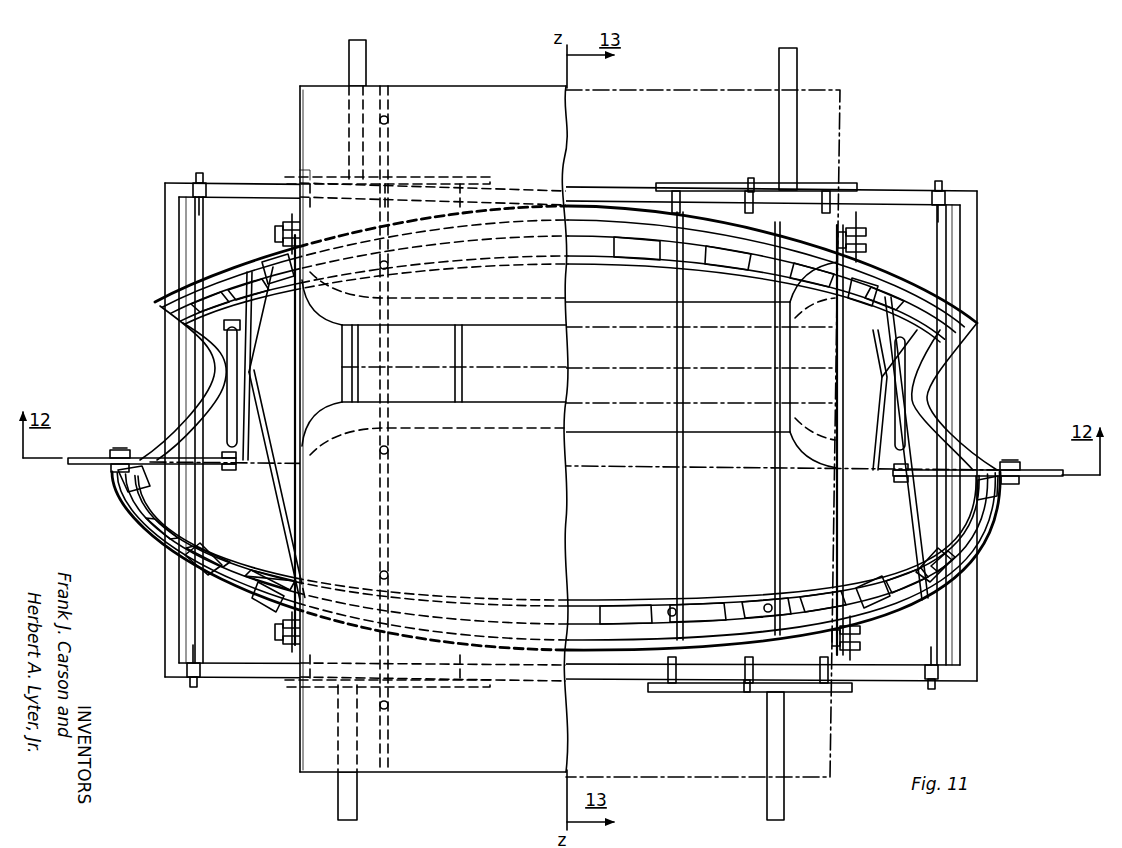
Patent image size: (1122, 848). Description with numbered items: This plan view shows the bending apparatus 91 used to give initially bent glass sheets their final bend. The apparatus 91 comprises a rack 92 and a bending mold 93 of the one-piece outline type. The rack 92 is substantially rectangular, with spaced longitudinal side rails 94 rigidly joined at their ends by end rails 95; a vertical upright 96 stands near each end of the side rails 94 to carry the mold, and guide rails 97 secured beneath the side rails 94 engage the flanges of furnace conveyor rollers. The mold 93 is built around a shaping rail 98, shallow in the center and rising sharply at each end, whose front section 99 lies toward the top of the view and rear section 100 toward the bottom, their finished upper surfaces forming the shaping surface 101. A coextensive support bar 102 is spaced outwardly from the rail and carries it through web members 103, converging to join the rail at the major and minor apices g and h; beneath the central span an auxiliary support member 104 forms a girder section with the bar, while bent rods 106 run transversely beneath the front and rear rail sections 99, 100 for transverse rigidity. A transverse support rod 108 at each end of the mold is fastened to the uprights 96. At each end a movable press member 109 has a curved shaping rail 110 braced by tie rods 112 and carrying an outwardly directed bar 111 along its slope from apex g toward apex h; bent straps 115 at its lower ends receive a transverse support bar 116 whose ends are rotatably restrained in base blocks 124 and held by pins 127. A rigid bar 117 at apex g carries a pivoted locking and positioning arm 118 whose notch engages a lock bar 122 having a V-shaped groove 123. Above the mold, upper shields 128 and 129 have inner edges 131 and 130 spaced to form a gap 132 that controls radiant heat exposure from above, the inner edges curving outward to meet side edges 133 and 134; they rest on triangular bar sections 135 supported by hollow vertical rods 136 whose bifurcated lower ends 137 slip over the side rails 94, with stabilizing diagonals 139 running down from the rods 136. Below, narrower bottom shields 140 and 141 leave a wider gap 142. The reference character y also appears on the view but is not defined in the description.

The bending apparatus 91 is at (242, 128).
The rack 92 is at (170, 178).
The bending mold 93 is at (170, 284).
The side rails 94 is at (884, 200).
The end rails 95 is at (177, 222).
The vertical upright 96 is at (204, 183).
The guide rails 97 is at (349, 66).
The shaping rail 98 is at (630, 598).
The front section 99 is at (737, 266).
The rear section 100 is at (714, 600).
The shaping surface 101 is at (584, 598).
The support bar 102 is at (168, 566).
The web members 103 is at (170, 528).
The auxiliary support member 104 is at (604, 208).
The bent rods 106 is at (680, 508).
The transverse support rod 108 is at (195, 630).
The press member 109 is at (226, 360).
The shaping rail of press member 110 is at (196, 582).
The outwardly directed bar 111 is at (206, 402).
The tie rods 112 is at (276, 491).
The bent strap 115 is at (858, 292).
The transverse support bar 116 is at (840, 392).
The rigid bar 117 is at (250, 458).
The locking and positioning arm 118 is at (86, 468).
The lock bar 122 is at (122, 450).
The V-shaped groove 123 is at (112, 452).
The base block 124 is at (283, 240).
The pin 127 is at (278, 224).
The upper shield 128 is at (325, 120).
The upper shield 129 is at (326, 726).
The inner longitudinal edge 130 is at (540, 404).
The inner edge 131 is at (540, 328).
The gap 132 is at (478, 378).
The side edge 133 is at (302, 522).
The side edge 134 is at (300, 174).
The triangular bar sections 135 is at (386, 356).
The vertical rods 136 is at (750, 180).
The bifurcated lower ends 137 is at (748, 204).
The stabilizing diagonals 139 is at (440, 182).
The bottom shield 140 is at (642, 306).
The bottom shield 141 is at (589, 456).
The gap 142 is at (637, 380).
The minor apex h is at (160, 318).
The major apex g is at (142, 470).
The band line y is at (344, 368).